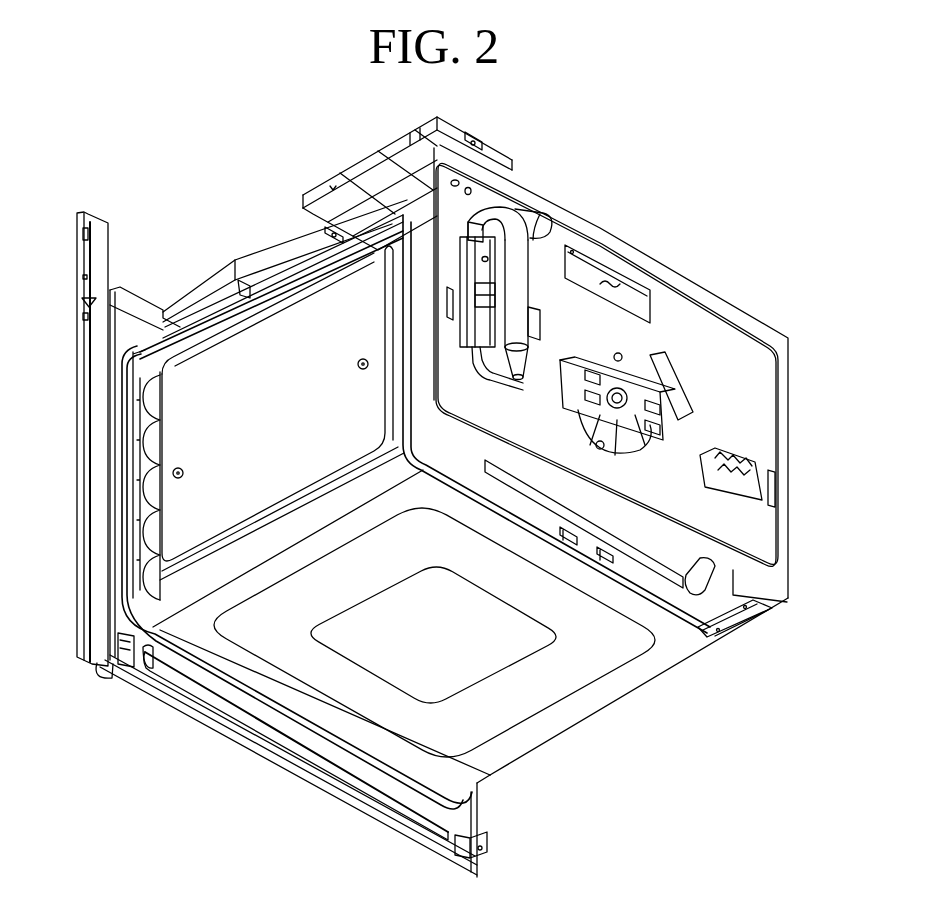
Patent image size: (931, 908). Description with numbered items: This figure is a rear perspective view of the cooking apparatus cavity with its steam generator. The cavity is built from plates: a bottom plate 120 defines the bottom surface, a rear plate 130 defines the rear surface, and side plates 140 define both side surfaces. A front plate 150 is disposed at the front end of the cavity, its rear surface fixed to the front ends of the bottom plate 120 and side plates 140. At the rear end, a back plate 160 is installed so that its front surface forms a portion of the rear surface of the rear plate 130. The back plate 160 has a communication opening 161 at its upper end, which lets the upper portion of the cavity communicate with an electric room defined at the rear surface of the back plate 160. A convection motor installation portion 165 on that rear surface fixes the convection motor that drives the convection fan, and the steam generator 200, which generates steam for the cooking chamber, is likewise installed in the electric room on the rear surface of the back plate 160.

The bottom plate 120 is at (510, 647).
The rear plate 130 is at (740, 612).
The side plates 140 is at (282, 340).
The front plate 150 is at (100, 617).
The back plate 160 is at (762, 364).
The communication opening 161 is at (610, 282).
The convection motor installation portion 165 is at (632, 380).
The steam generator 200 is at (518, 206).